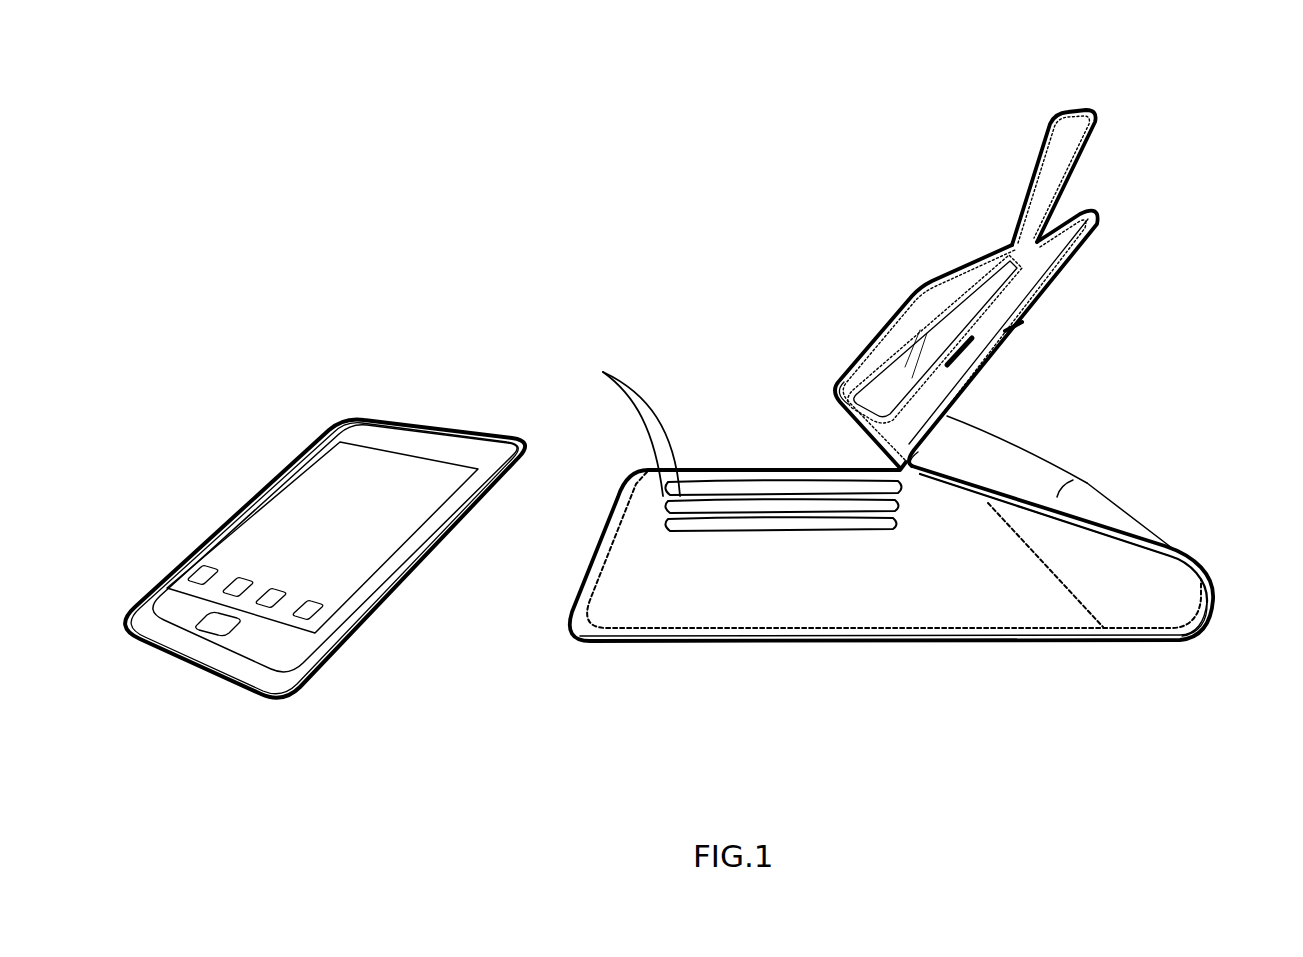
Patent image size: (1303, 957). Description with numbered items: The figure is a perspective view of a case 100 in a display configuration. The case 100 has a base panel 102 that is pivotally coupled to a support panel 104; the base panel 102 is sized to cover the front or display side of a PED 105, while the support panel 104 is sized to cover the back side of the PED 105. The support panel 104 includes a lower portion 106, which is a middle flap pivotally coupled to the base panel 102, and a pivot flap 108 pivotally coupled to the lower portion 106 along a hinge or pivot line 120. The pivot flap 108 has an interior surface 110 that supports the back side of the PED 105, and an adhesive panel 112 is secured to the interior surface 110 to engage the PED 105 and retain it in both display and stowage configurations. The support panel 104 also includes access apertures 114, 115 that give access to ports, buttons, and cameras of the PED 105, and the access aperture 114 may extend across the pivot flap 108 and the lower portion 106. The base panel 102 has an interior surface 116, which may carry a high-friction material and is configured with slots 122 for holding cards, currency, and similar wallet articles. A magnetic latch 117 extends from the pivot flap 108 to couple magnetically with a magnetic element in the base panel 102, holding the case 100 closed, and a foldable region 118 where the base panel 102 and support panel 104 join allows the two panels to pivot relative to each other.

The case 100 is at (728, 177).
The base panel 102 is at (905, 641).
The support panel 104 is at (1112, 210).
The PED 105 is at (243, 492).
The lower portion 106 is at (1100, 497).
The pivot flap 108 is at (1017, 327).
The interior surface 110 is at (857, 360).
The adhesive panel 112 is at (943, 325).
The access aperture 114 is at (833, 392).
The access aperture 115 is at (947, 355).
The interior surface 116 is at (788, 586).
The magnetic latch 117 is at (1022, 206).
The foldable region 118 is at (1193, 627).
The pivot line 120 is at (920, 461).
The slots 122 is at (604, 372).